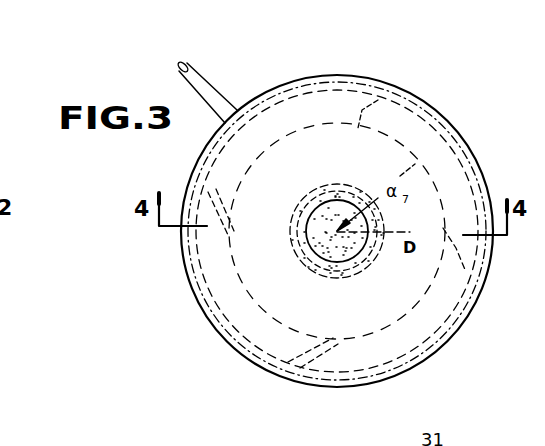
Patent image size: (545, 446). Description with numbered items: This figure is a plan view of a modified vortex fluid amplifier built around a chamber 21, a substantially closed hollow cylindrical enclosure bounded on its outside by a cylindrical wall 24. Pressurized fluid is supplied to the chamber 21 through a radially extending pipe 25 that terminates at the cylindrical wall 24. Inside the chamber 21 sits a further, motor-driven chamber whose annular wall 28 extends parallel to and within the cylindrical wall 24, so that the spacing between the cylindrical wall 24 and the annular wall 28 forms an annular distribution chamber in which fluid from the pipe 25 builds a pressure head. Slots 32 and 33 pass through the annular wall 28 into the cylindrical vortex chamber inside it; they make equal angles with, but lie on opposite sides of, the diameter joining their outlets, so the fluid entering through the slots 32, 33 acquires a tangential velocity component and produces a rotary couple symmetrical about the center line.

The chamber 21 is at (300, 302).
The cylindrical wall 24 is at (414, 368).
The radially extending pipe 25 is at (212, 83).
The annular wall 28 is at (246, 290).
The slot 32 is at (223, 208).
The slot 33 is at (324, 341).